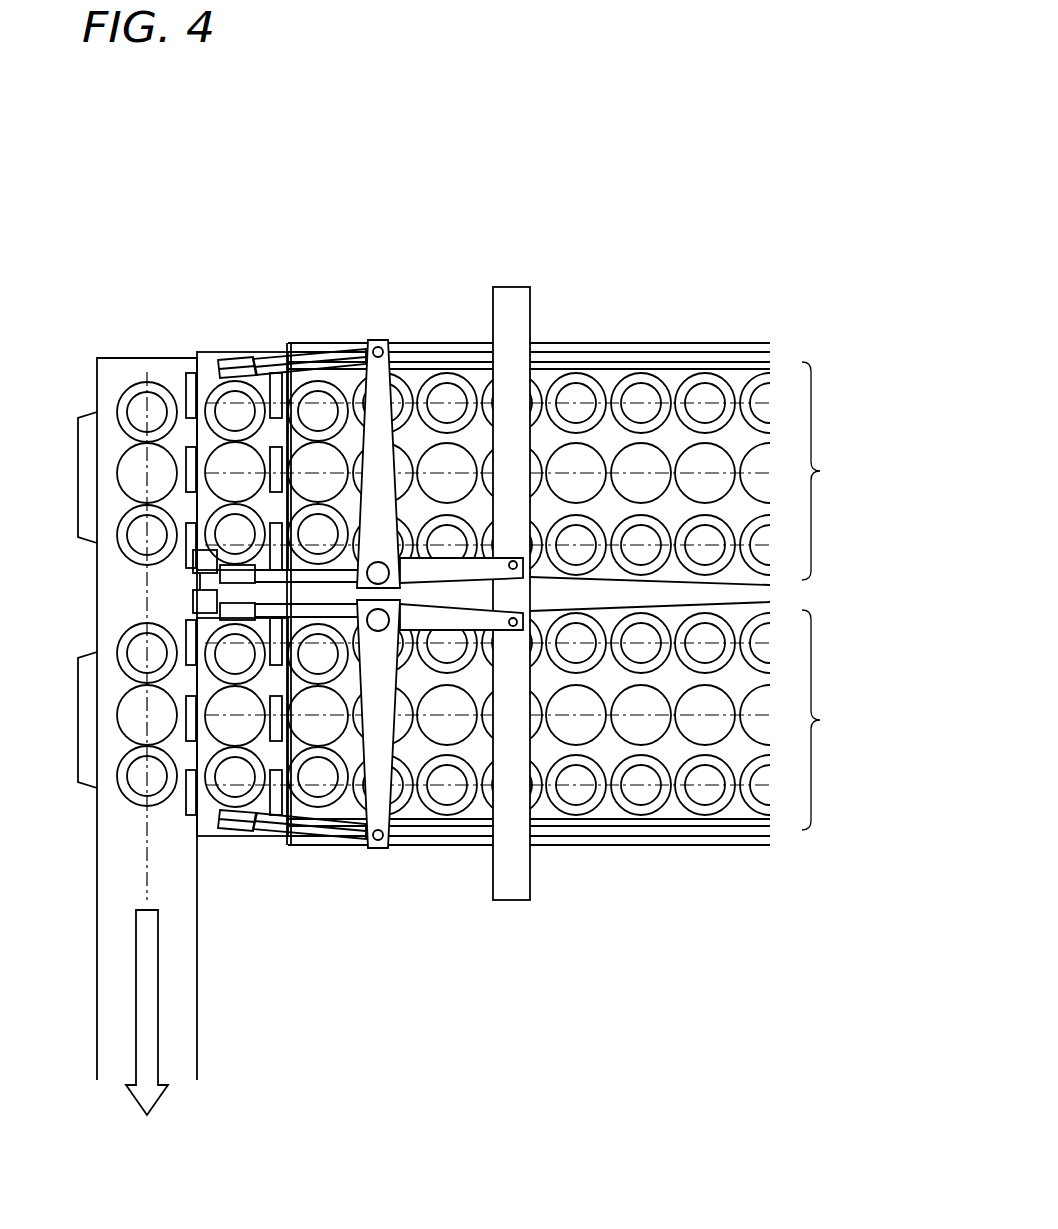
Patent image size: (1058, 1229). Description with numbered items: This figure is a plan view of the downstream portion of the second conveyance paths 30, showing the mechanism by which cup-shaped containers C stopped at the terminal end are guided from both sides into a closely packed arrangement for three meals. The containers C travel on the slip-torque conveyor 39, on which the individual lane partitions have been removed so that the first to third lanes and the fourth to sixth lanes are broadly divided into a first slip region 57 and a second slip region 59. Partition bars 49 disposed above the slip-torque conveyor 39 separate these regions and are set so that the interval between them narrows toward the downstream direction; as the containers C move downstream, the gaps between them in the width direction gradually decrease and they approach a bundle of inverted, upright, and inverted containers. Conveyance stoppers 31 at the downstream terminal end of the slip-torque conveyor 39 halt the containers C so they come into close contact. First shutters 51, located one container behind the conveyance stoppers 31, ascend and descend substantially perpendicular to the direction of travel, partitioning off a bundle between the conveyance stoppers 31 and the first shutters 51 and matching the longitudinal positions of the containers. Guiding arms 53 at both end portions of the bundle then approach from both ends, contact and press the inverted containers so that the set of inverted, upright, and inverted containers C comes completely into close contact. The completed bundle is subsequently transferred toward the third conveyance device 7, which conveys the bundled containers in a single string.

The third conveyance device 7 is at (96, 1024).
The cup-shaped container C is at (138, 536).
The conveyance stopper 31 is at (192, 373).
The first shutter 51 is at (278, 372).
The second conveyance path 30 is at (772, 846).
The partition bar 49 is at (611, 368).
The guiding arm 53 is at (375, 750).
The slip-torque conveyor 39 is at (607, 750).
The first slip region 57 is at (833, 471).
The second slip region 59 is at (833, 720).